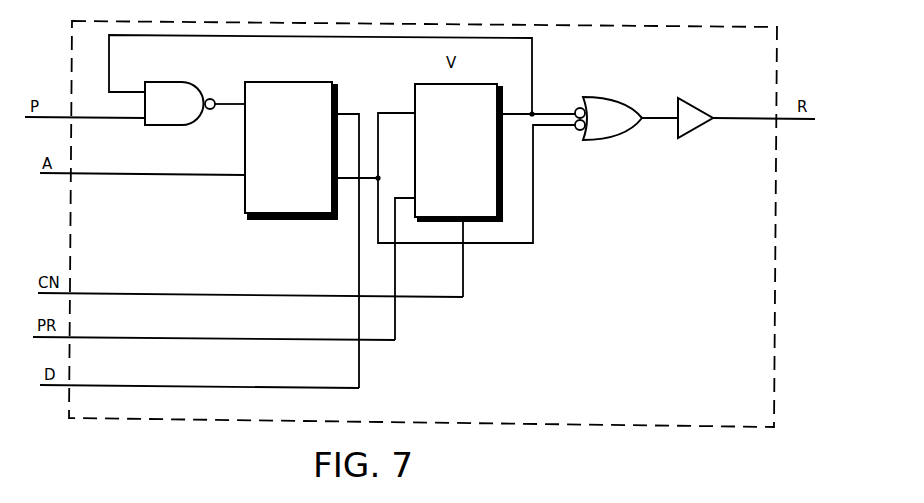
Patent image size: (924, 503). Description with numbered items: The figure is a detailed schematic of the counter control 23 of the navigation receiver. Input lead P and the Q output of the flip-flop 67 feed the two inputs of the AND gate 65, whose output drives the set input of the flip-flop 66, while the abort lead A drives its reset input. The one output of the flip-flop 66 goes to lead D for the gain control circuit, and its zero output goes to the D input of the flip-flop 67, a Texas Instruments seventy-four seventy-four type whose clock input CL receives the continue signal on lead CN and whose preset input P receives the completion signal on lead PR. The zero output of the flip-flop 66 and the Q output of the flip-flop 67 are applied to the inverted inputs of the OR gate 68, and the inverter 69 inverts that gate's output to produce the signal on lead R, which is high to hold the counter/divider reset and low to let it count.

The counter control 23 is at (775, 288).
The AND gate 65 is at (184, 82).
The flip-flop 66 is at (339, 96).
The flip-flop 67 is at (490, 84).
The OR gate 68 is at (628, 136).
The inverter 69 is at (698, 127).